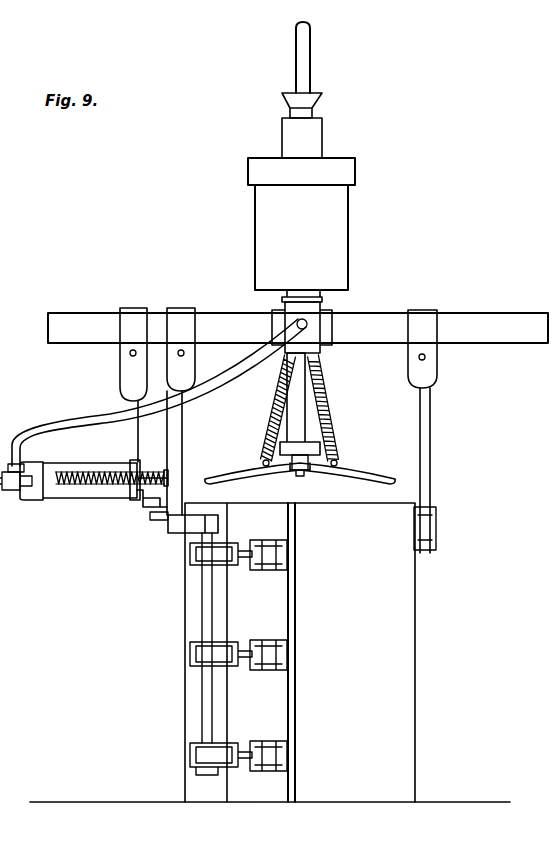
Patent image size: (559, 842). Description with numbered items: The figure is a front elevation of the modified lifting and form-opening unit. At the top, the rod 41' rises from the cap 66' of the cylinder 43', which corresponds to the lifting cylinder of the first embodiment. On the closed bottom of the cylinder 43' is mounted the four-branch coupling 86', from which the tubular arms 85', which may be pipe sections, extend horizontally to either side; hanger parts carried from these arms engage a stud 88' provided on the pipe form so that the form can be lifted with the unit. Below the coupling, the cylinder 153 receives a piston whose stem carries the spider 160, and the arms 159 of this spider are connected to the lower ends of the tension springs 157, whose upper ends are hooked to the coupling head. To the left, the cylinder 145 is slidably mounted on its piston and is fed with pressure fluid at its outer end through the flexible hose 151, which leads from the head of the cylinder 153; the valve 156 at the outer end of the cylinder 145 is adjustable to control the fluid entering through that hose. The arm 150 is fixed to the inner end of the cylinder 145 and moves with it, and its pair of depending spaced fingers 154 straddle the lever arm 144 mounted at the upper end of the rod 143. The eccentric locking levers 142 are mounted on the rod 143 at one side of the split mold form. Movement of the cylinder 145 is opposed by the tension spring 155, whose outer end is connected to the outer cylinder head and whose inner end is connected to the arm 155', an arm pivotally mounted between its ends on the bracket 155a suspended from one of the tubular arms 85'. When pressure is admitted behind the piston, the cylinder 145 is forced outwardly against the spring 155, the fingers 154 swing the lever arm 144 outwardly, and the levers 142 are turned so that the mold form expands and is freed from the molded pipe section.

The rod 41' is at (322, 57).
The cap 66' is at (315, 158).
The cylinder 43' is at (320, 237).
The tubular arm 85' is at (298, 313).
The four-branch coupling 86' is at (321, 337).
The bracket 155a is at (128, 384).
The flexible hose 151 is at (70, 418).
The tension spring 155 is at (110, 461).
The arm 155' is at (190, 467).
The tension springs 157 is at (326, 418).
The cylinder 153 is at (306, 434).
The arms 159 is at (355, 479).
The spider 160 is at (299, 474).
The valve 156 is at (8, 492).
The cylinder 145 is at (102, 494).
The arm 150 is at (147, 508).
The lever arm 144 is at (214, 523).
The eccentric locking levers 142 is at (289, 555).
The depending fingers 154 is at (163, 535).
The rod 143 is at (200, 612).
The stud 88' is at (442, 528).